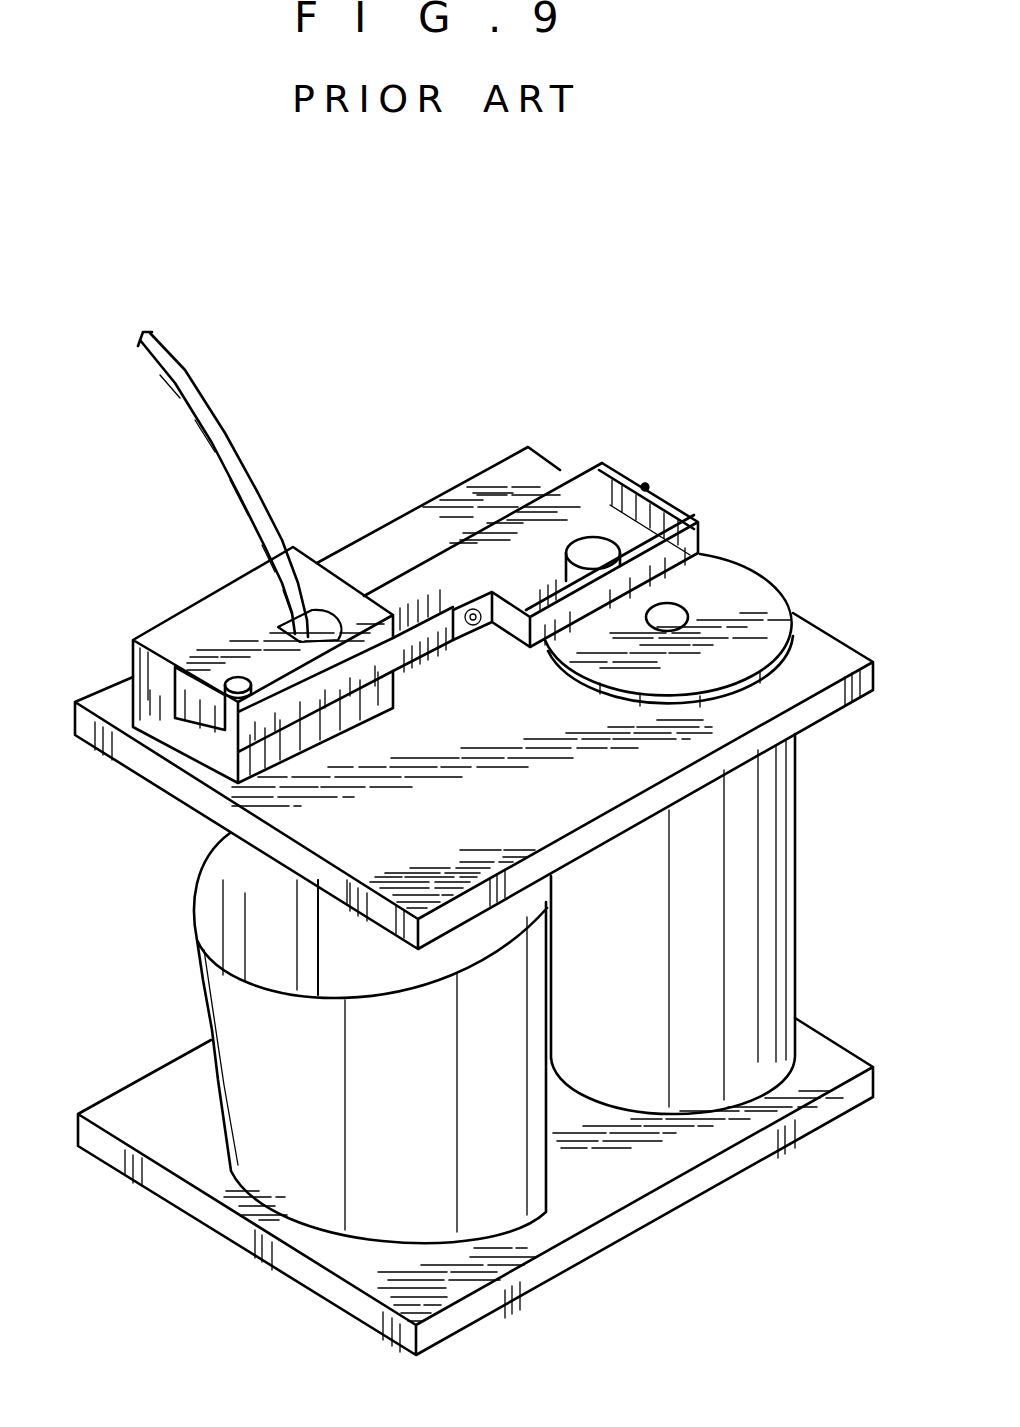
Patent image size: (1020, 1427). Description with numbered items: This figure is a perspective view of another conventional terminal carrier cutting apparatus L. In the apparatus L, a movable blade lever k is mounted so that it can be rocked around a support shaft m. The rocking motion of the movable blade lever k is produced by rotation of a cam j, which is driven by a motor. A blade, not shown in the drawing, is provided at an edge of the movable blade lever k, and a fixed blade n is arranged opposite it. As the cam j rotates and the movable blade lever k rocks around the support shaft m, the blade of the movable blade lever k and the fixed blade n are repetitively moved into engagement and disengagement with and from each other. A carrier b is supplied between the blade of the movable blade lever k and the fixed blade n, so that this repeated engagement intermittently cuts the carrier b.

The carrier b is at (235, 460).
The movable blade lever k is at (418, 576).
The terminal carrier cutting apparatus L is at (668, 458).
The fixed blade n is at (317, 598).
The support shaft m is at (147, 657).
The cam j is at (728, 602).